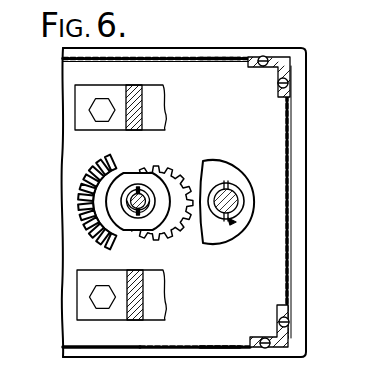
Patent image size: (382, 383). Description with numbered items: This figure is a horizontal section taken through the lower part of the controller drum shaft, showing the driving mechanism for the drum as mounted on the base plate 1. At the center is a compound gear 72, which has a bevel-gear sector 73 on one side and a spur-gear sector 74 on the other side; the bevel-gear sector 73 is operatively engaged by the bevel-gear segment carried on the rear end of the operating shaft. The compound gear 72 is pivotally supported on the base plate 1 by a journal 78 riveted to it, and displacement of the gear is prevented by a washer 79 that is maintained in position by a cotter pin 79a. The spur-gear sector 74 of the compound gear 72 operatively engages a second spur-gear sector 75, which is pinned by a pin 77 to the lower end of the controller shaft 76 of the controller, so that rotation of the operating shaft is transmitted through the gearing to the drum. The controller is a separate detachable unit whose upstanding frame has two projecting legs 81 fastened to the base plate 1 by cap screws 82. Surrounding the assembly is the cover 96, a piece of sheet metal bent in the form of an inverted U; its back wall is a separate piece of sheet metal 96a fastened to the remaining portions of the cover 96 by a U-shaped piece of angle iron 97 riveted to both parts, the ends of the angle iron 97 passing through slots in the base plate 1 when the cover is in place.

The base plate 1 is at (298, 193).
The compound gear 72 is at (142, 229).
The bevel-gear sector 73 is at (98, 171).
The spur-gear sector 74 is at (172, 178).
The spur-gear sector 75 is at (208, 180).
The controller shaft 76 is at (236, 206).
The pin 77 is at (234, 225).
The journal 78 is at (149, 211).
The washer 79 is at (140, 190).
The cotter pin 79a is at (135, 212).
The projecting legs 81 is at (133, 88).
The cap screws 82 is at (102, 104).
The cover 96 is at (212, 57).
The piece of sheet metal 96a is at (307, 129).
The U-shaped piece of angle iron 97 is at (277, 72).